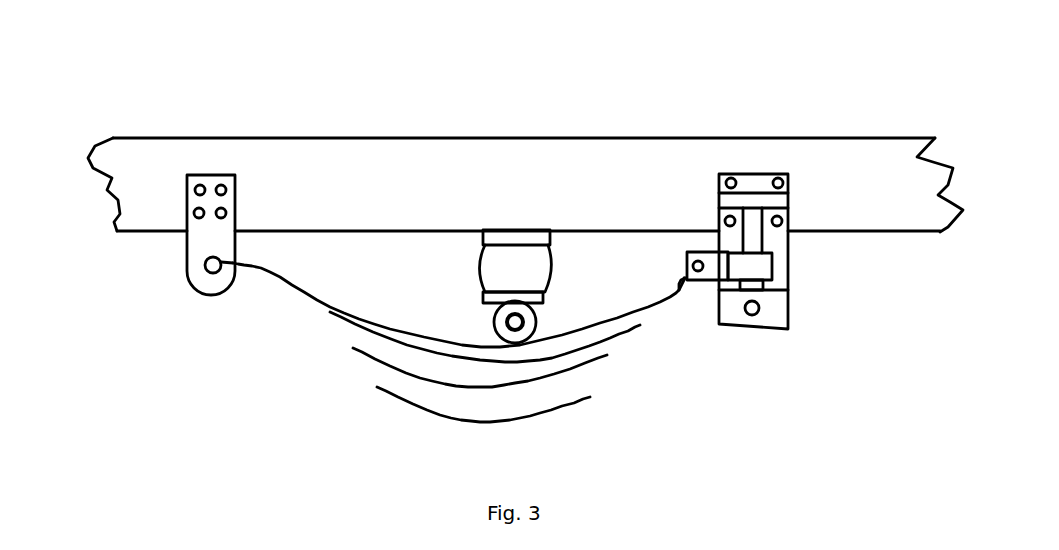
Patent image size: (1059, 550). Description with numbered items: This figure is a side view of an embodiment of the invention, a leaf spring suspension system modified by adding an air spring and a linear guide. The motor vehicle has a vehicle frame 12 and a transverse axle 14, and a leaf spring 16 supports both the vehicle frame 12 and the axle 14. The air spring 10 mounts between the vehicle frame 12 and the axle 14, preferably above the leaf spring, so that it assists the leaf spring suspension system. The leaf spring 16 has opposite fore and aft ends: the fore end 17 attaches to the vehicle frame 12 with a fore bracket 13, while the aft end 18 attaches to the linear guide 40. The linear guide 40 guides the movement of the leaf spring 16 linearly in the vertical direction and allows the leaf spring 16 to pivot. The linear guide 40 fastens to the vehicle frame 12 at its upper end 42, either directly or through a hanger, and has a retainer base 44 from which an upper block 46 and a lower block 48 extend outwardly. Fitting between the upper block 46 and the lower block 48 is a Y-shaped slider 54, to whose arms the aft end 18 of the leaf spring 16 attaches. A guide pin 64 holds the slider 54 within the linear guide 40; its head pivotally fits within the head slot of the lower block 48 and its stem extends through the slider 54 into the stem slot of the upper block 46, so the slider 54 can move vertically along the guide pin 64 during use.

The air spring 10 is at (505, 267).
The vehicle frame 12 is at (288, 163).
The fore bracket 13 is at (202, 242).
The transverse axle 14 is at (528, 323).
The leaf spring 16 is at (358, 353).
The fore end 17 is at (253, 267).
The aft end 18 is at (683, 283).
The linear guide 40 is at (755, 183).
The upper end 42 is at (738, 176).
The retainer base 44 is at (725, 242).
The upper block 46 is at (775, 205).
The lower block 48 is at (778, 313).
The slider 54 is at (713, 270).
The guide pin 64 is at (755, 237).